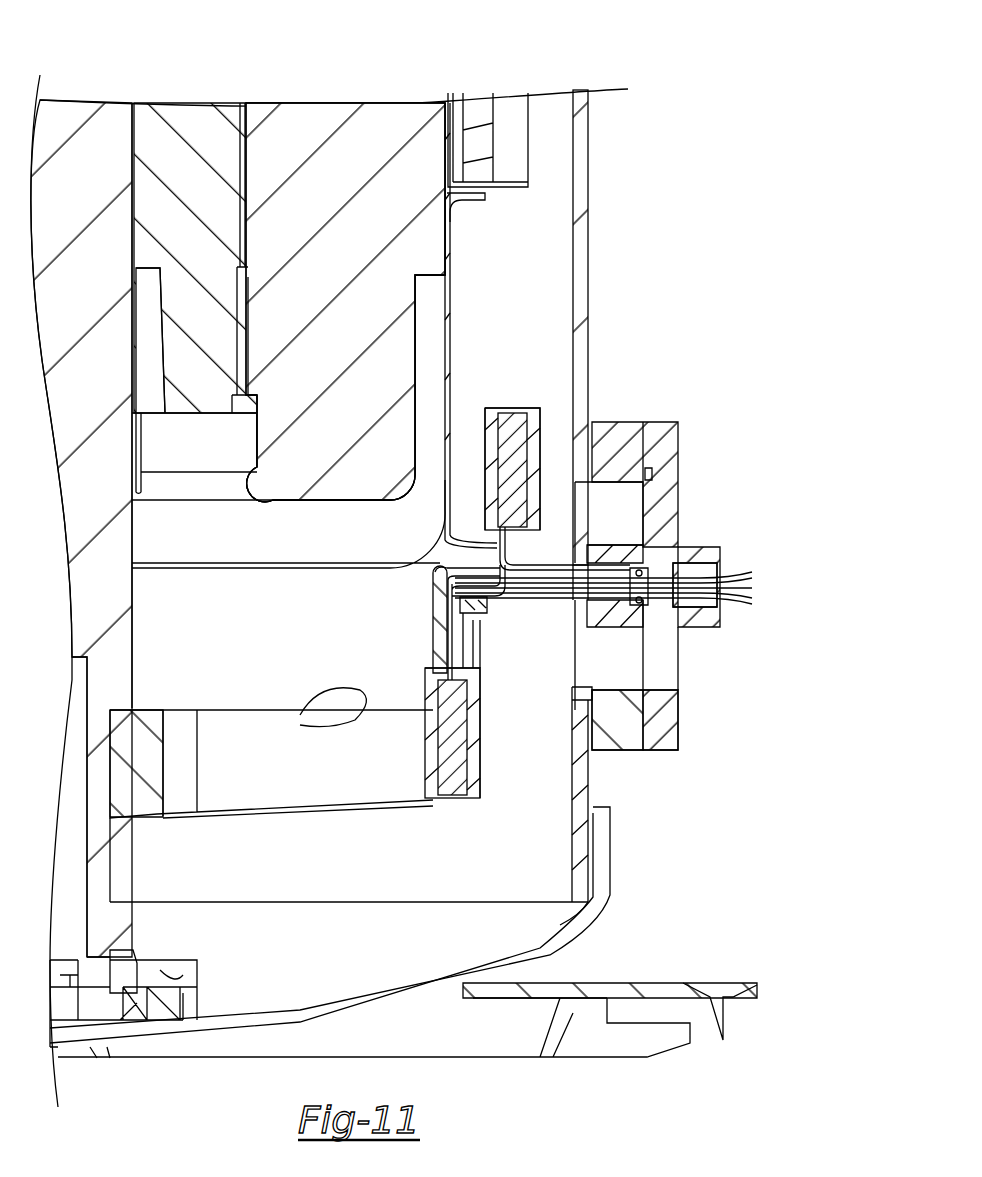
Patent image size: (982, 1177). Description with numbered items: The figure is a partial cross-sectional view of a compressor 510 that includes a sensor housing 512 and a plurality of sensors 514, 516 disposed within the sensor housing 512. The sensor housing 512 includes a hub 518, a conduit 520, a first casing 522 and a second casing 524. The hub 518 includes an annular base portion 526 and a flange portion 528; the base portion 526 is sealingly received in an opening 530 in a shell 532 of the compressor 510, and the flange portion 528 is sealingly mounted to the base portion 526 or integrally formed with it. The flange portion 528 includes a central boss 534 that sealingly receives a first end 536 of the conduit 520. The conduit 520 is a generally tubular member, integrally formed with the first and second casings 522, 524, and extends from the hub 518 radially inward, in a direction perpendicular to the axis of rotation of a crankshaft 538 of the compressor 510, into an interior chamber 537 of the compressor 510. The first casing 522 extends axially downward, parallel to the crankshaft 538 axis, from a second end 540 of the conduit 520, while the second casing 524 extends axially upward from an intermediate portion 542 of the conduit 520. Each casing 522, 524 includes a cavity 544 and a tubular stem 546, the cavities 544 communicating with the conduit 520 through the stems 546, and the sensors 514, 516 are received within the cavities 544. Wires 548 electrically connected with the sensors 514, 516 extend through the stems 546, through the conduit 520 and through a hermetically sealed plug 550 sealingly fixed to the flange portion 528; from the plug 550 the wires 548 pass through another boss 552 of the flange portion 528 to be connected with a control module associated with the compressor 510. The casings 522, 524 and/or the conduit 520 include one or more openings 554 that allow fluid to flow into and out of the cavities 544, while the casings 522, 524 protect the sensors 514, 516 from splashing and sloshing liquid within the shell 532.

The compressor 510 is at (552, 76).
The sensor housing 512 is at (688, 444).
The sensor 514 is at (446, 800).
The sensor 516 is at (502, 408).
The hub 518 is at (642, 424).
The conduit 520 is at (490, 548).
The first casing 522 is at (425, 771).
The second casing 524 is at (575, 410).
The annular base portion 526 is at (620, 742).
The flange portion 528 is at (668, 715).
The opening 530 is at (574, 690).
The shell 532 is at (582, 135).
The central boss 534 is at (602, 545).
The first end 536 is at (623, 610).
The interior chamber 537 is at (540, 200).
The crankshaft 538 is at (118, 648).
The second end 540 is at (437, 576).
The intermediate portion 542 is at (548, 564).
The cavity 544 is at (525, 440).
The tubular stem 546 is at (497, 547).
The wires 548 is at (737, 574).
The hermetically sealed plug 550 is at (642, 580).
The boss 552 is at (698, 628).
The opening 554 is at (475, 648).